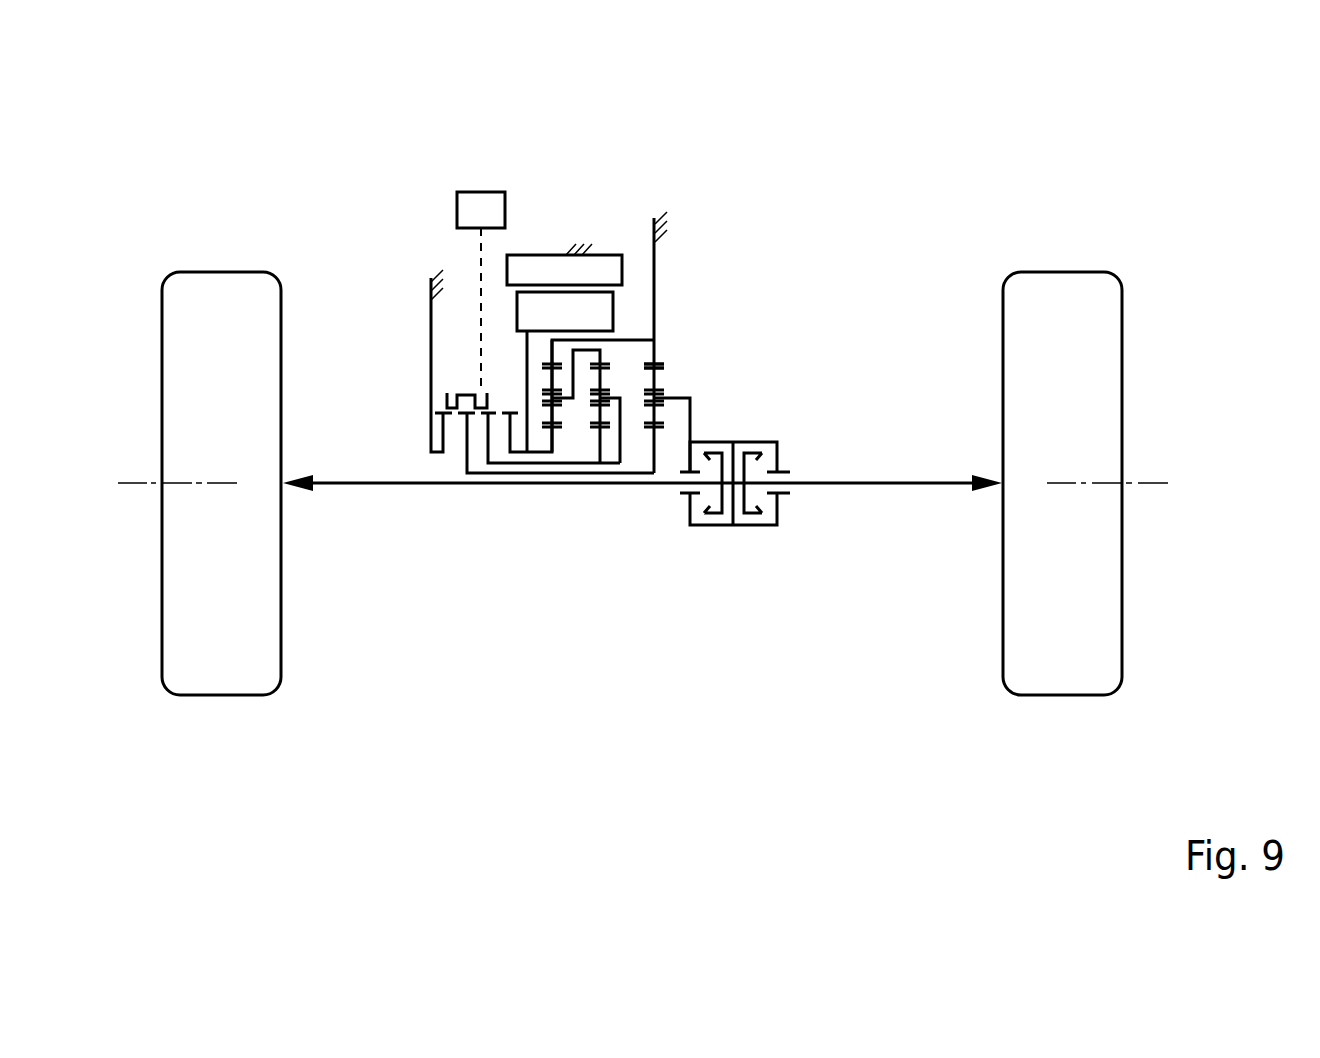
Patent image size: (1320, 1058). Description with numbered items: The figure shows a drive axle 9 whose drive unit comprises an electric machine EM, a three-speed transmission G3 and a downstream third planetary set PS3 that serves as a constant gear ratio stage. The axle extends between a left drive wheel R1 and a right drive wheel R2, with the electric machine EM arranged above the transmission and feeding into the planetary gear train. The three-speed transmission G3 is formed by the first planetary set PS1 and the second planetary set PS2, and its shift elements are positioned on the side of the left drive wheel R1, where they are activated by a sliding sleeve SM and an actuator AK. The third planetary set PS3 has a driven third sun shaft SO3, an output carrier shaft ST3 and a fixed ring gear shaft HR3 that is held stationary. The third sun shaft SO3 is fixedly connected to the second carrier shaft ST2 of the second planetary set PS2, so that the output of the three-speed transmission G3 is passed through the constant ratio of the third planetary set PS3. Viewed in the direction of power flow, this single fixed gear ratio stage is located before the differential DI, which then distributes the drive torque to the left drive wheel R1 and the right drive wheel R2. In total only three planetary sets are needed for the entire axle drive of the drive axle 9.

The drive axle 9 is at (735, 258).
The left drive wheel R1 is at (243, 673).
The right drive wheel R2 is at (1040, 673).
The actuator AK is at (477, 203).
The electric machine EM is at (552, 245).
The sliding sleeve SM is at (464, 387).
The first planetary set PS1 is at (552, 490).
The second planetary set PS2 is at (600, 490).
The third planetary set PS3 is at (653, 490).
The second carrier shaft ST2 is at (613, 398).
The third ring gear shaft HR3 is at (655, 352).
The third carrier shaft ST3 is at (690, 418).
The third sun shaft SO3 is at (650, 478).
The differential DI is at (752, 548).
The three-speed transmission G3 is at (568, 667).